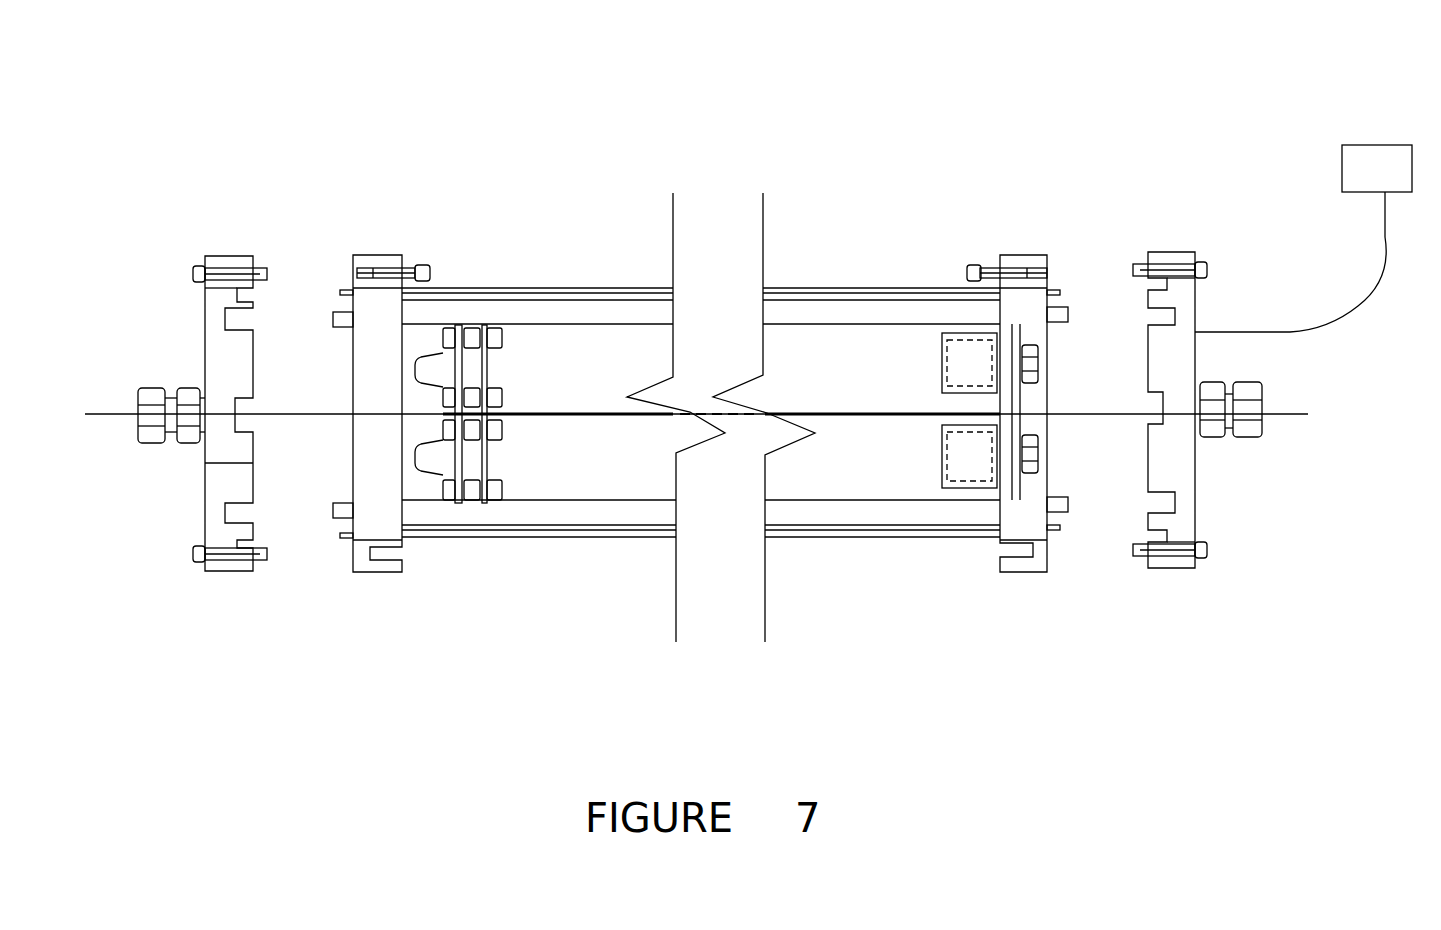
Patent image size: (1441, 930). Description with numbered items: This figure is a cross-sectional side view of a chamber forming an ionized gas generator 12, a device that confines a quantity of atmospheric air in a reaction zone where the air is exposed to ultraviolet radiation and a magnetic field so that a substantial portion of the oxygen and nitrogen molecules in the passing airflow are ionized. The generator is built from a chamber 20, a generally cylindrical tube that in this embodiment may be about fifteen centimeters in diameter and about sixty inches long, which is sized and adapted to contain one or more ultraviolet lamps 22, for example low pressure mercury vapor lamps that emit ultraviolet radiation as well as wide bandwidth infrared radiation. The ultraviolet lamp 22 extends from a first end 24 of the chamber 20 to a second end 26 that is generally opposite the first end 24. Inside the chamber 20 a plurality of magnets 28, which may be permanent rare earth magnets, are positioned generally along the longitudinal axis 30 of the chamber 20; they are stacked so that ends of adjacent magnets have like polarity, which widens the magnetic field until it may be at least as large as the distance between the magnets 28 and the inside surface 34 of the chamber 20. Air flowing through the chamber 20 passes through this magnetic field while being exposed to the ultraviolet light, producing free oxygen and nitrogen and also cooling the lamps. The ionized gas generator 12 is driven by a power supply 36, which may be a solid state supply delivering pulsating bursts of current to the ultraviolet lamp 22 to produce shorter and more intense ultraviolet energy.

The ionized gas generator 12 is at (862, 137).
The chamber 20 is at (580, 288).
The ultraviolet lamp 22 is at (833, 402).
The first end 24 is at (1048, 460).
The second end 26 is at (357, 462).
The magnets 28 is at (570, 414).
The longitudinal axis 30 is at (318, 413).
The inside surface 34 is at (542, 302).
The power supply 36 is at (1373, 145).